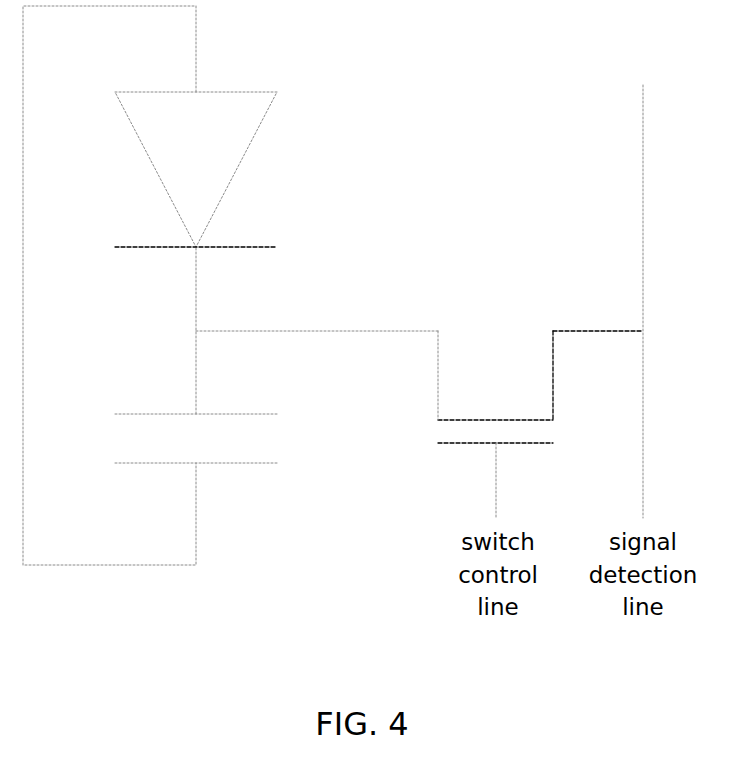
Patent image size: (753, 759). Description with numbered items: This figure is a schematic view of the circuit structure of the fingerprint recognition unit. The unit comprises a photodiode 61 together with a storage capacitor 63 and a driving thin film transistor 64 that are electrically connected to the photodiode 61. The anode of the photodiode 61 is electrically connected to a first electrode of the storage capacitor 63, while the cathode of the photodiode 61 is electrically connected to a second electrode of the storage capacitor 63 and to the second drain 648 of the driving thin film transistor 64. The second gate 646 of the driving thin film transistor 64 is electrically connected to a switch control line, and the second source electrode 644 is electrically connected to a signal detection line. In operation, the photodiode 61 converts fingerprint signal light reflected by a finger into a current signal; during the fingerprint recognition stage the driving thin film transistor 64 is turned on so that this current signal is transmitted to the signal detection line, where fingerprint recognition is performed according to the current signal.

The photodiode 61 is at (217, 113).
The storage capacitor 63 is at (217, 464).
The driving thin film transistor 64 is at (470, 275).
The second source electrode 644 is at (553, 393).
The second gate 646 is at (516, 440).
The second drain 648 is at (440, 353).